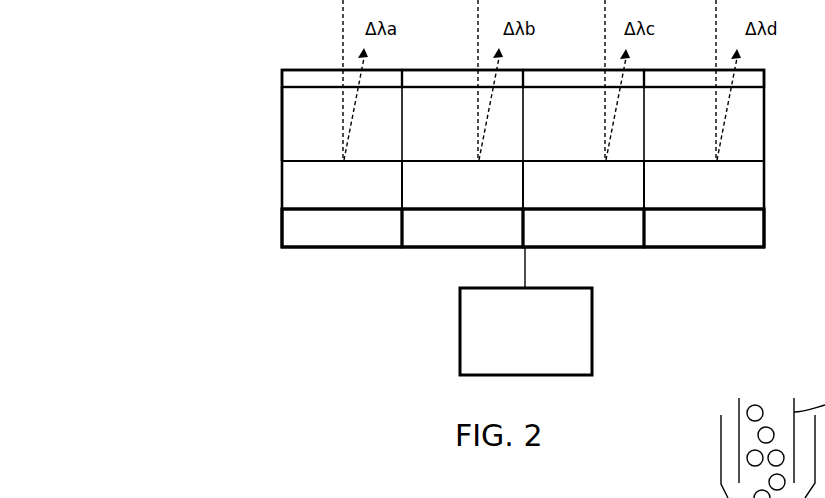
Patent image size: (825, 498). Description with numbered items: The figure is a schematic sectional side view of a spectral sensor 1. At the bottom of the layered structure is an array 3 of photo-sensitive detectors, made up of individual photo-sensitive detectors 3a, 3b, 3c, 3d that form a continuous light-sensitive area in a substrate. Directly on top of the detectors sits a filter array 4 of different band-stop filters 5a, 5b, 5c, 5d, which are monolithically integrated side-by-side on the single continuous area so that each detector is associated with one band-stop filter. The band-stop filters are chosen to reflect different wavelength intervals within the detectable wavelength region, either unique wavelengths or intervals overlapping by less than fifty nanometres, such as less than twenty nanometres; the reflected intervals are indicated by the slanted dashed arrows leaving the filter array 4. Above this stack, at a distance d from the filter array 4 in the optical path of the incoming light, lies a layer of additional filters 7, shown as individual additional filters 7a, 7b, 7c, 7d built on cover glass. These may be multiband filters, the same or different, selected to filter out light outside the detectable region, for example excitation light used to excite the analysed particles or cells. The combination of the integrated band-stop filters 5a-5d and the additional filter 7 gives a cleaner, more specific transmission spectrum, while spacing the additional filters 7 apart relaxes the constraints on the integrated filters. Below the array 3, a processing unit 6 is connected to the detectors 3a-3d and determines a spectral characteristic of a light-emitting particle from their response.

The spectral sensor 1 is at (185, 72).
The array of photo-sensitive detectors 3 is at (788, 209).
The photo-sensitive detector 3a is at (342, 228).
The photo-sensitive detector 3b is at (462, 228).
The photo-sensitive detector 3c is at (583, 228).
The photo-sensitive detector 3d is at (704, 228).
The filter array 4 is at (788, 161).
The band-stop filter 5a is at (342, 185).
The band-stop filter 5b is at (462, 185).
The band-stop filter 5c is at (583, 185).
The band-stop filter 5d is at (704, 185).
The processing unit 6 is at (526, 311).
The additional filter 7 is at (784, 70).
The additional filter 7a is at (312, 72).
The additional filter 7b is at (442, 72).
The additional filter 7c is at (586, 72).
The additional filter 7d is at (698, 72).
The distance d is at (265, 87).